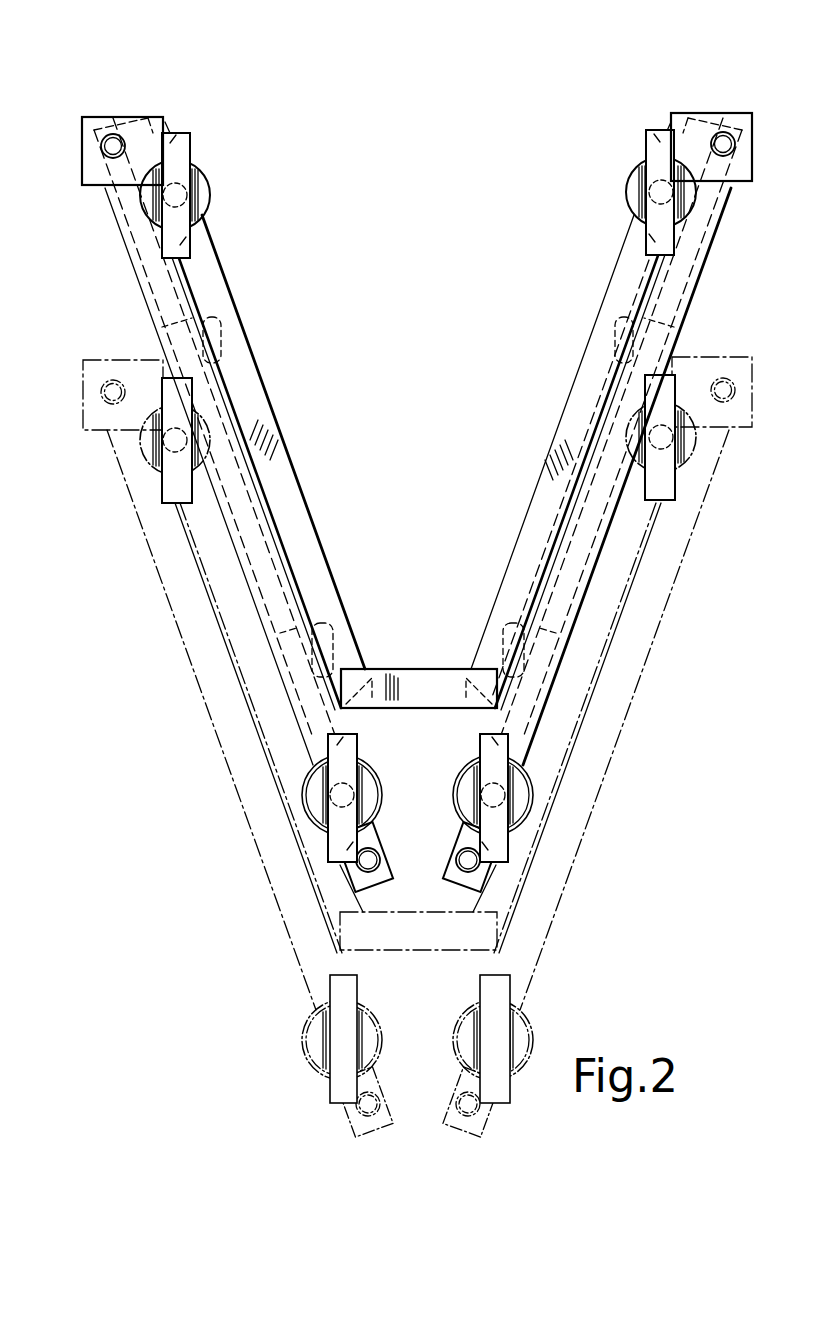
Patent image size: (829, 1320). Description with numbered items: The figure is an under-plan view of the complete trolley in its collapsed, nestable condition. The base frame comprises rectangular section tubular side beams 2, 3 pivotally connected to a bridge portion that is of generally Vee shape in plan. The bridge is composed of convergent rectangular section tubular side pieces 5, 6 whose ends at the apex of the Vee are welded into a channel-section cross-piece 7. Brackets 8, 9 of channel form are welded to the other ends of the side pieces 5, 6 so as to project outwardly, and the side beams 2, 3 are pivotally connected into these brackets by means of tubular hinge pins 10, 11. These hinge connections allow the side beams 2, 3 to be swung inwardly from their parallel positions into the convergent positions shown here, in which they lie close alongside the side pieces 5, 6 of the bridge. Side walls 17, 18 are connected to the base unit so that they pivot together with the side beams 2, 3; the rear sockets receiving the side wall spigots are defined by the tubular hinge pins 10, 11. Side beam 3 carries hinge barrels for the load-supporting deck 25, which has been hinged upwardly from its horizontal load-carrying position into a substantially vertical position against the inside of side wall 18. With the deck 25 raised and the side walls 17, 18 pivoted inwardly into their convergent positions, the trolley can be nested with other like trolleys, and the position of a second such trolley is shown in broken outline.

The side beam 2 is at (287, 705).
The side beam 3 is at (549, 705).
The side piece 5 is at (272, 468).
The side piece 6 is at (562, 456).
The cross-piece 7 is at (424, 690).
The bracket 8 is at (140, 135).
The bracket 9 is at (697, 120).
The tubular hinge pin 10 is at (116, 146).
The tubular hinge pin 11 is at (723, 140).
The side wall 17 is at (175, 294).
The side wall 18 is at (658, 298).
The load-supporting deck 25 is at (600, 403).